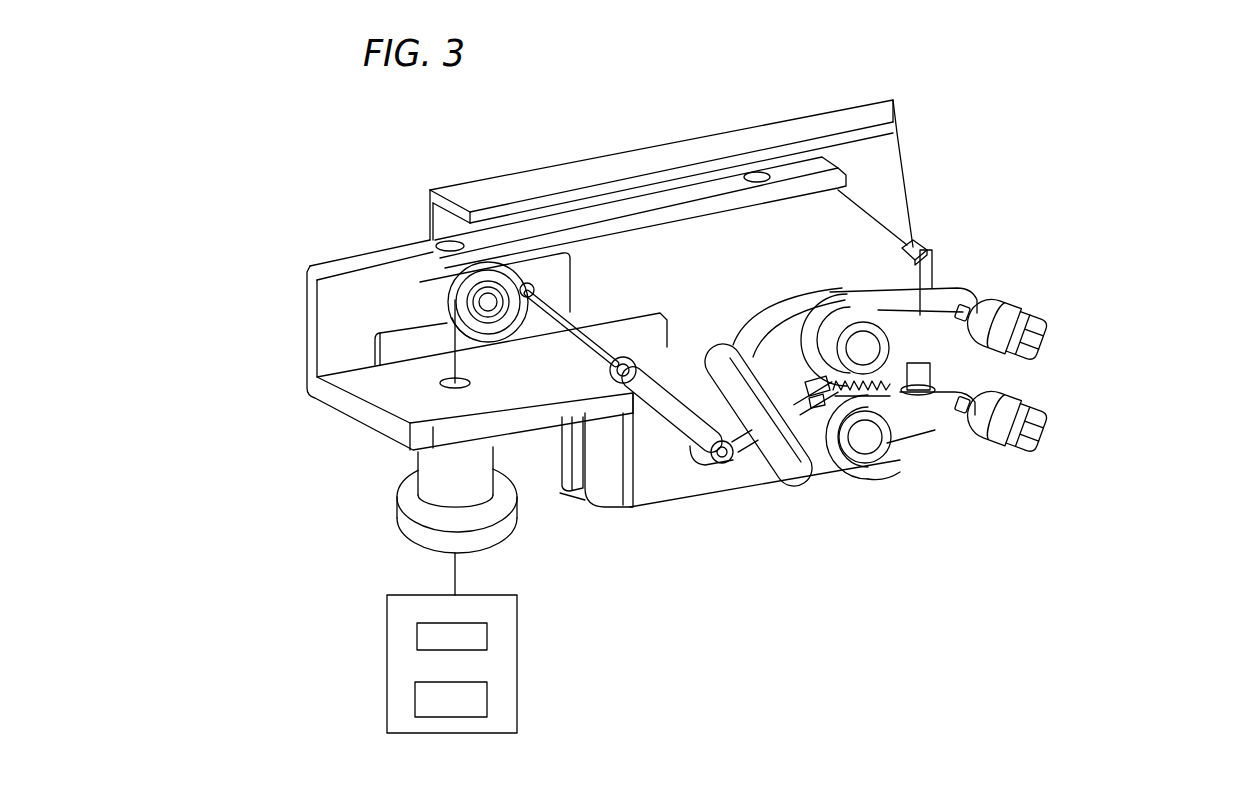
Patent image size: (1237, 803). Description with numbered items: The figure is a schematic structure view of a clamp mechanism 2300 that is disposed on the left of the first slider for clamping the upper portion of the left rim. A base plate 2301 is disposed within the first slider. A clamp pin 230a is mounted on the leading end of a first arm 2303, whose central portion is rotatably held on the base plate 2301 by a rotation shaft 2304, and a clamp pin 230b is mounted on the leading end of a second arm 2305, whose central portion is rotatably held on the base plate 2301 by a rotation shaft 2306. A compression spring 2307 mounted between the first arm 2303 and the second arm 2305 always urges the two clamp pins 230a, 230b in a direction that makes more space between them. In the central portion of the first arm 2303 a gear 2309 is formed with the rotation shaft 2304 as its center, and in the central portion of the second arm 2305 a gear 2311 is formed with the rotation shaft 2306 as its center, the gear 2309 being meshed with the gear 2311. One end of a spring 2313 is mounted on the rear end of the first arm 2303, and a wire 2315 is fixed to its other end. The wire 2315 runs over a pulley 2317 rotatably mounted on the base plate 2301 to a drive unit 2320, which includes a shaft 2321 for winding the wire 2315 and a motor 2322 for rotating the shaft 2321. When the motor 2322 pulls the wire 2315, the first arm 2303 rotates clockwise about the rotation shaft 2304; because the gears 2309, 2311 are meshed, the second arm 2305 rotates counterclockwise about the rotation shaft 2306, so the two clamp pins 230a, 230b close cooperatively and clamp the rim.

The clamp mechanism 2300 is at (1010, 208).
The base plate 2301 is at (703, 247).
The first arm 2303 is at (924, 250).
The rotation shaft 2304 is at (859, 330).
The second arm 2305 is at (920, 425).
The rotation shaft 2306 is at (867, 442).
The compression spring 2307 is at (923, 370).
The gear 2309 is at (823, 399).
The gear 2311 is at (824, 421).
The spring 2313 is at (672, 414).
The wire 2315 is at (583, 318).
The pulley 2317 is at (448, 302).
The clamp pin 230a is at (1010, 318).
The clamp pin 230b is at (1027, 408).
The drive unit 2320 is at (510, 672).
The shaft 2321 is at (415, 637).
The motor 2322 is at (415, 707).